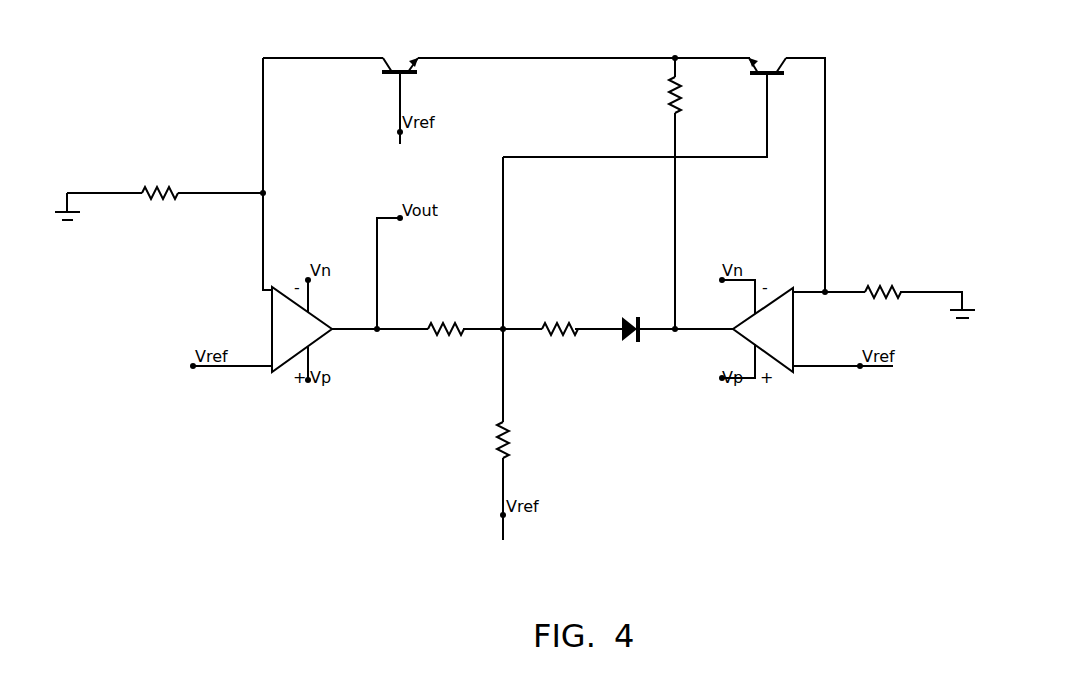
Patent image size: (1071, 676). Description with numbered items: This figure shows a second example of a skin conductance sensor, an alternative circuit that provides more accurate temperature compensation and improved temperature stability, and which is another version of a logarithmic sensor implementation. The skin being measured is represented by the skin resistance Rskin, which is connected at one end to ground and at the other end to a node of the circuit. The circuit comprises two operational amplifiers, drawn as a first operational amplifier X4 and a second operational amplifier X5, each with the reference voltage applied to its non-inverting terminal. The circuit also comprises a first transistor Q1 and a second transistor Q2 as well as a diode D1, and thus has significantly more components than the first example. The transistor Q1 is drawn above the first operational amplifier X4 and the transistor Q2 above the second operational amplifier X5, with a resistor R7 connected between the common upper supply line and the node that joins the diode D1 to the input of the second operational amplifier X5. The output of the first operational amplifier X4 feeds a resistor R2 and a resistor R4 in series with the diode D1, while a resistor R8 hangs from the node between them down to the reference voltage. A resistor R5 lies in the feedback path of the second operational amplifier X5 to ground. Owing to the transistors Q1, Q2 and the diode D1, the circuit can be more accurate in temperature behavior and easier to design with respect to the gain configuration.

The skin resistance resistor 1Meg Rskin is at (163, 214).
The transistor Q1 is at (400, 49).
The transistor Q2 is at (767, 50).
The resistor R7 3K R7 is at (661, 95).
The operational amplifier X4 is at (315, 329).
The operational amplifier X5 is at (749, 330).
The resistor R2 15k7 R2 is at (445, 307).
The resistor R4 2Meg R4 is at (560, 307).
The resistor R5 4meg7 R5 is at (883, 270).
The resistor R8 1k TC=.0036 R8 is at (439, 443).
The diode D1 is at (627, 341).